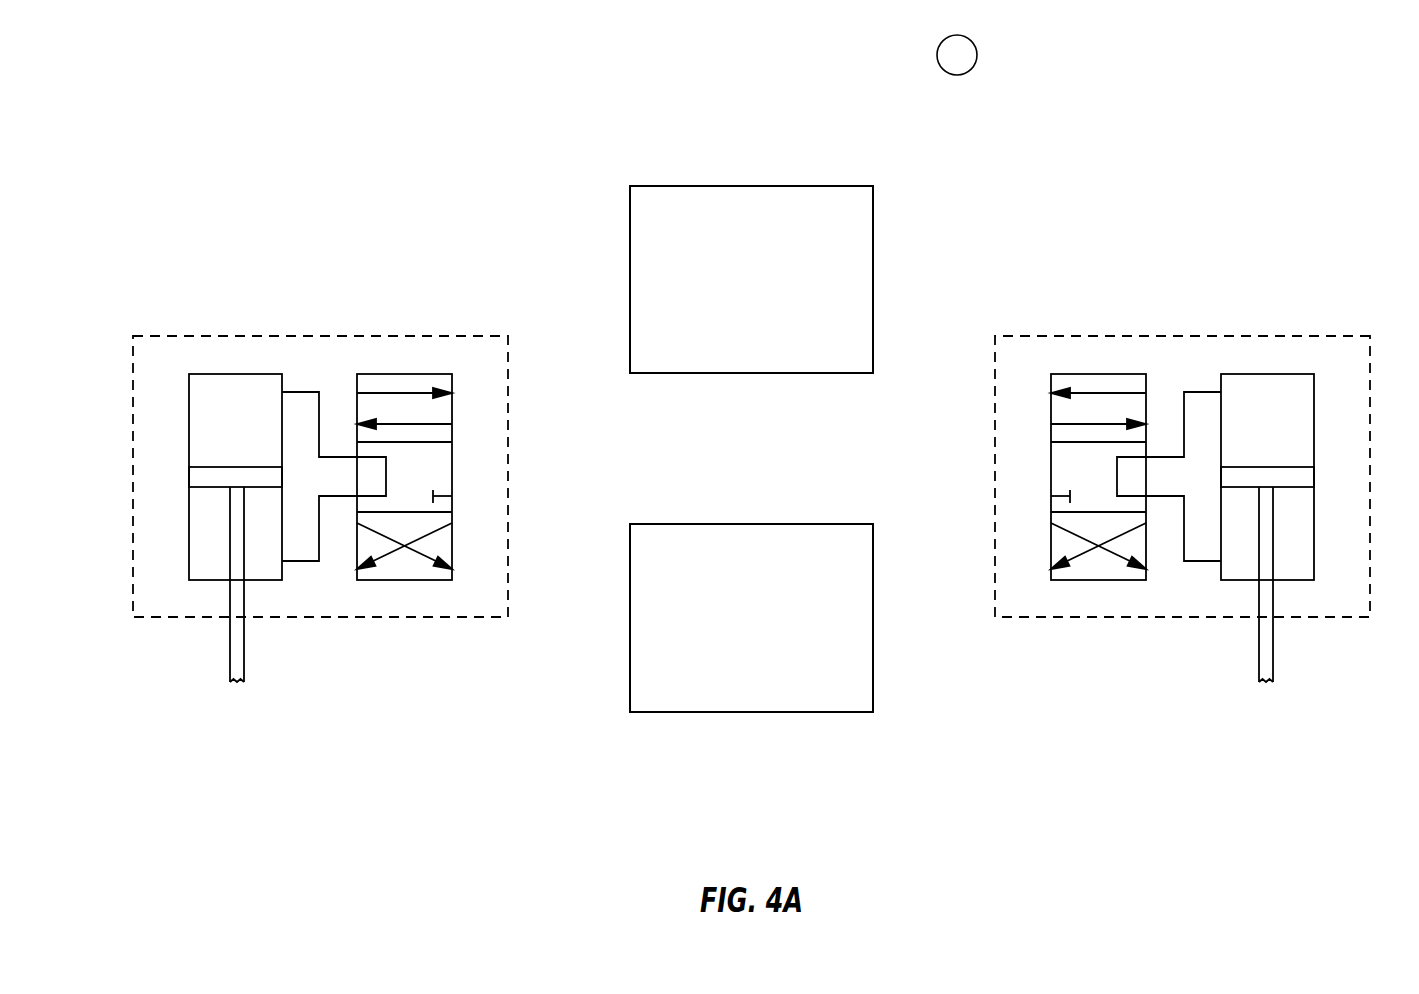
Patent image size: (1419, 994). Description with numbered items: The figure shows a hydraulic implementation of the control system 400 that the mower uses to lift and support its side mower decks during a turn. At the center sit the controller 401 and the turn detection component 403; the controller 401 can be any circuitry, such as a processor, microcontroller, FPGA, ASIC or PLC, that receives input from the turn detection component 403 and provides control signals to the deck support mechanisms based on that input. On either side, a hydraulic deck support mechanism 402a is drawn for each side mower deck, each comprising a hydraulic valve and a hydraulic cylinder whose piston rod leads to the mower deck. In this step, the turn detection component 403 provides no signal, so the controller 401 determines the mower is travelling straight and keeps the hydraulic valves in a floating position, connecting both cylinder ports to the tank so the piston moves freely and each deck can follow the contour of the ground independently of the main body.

The control system 400 is at (768, 76).
The controller 401 is at (768, 306).
The turn detection component 403 is at (768, 660).
The hydraulic deck support mechanism 402a is at (223, 328).